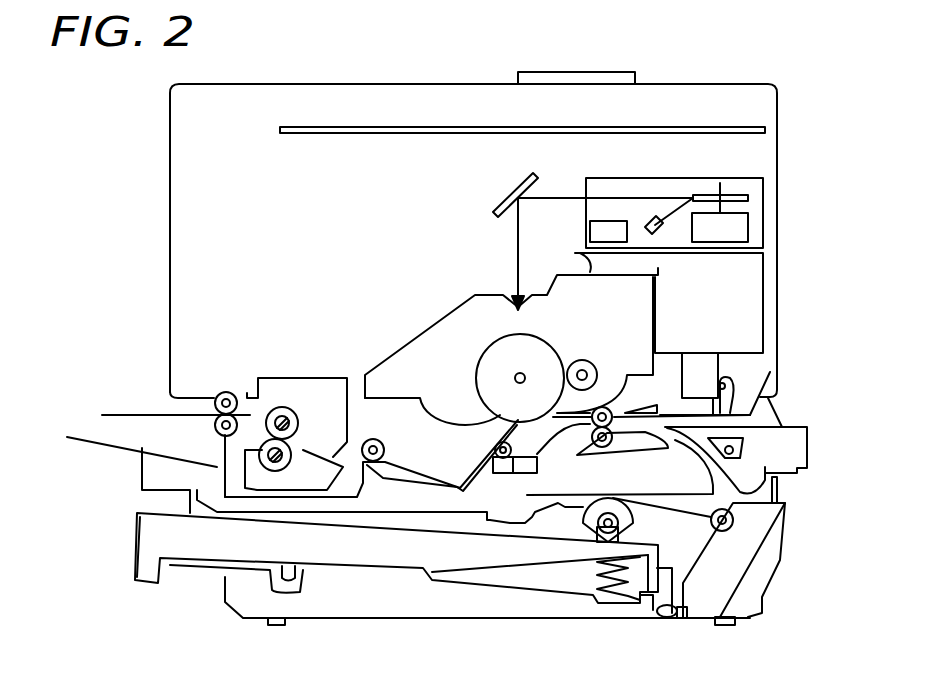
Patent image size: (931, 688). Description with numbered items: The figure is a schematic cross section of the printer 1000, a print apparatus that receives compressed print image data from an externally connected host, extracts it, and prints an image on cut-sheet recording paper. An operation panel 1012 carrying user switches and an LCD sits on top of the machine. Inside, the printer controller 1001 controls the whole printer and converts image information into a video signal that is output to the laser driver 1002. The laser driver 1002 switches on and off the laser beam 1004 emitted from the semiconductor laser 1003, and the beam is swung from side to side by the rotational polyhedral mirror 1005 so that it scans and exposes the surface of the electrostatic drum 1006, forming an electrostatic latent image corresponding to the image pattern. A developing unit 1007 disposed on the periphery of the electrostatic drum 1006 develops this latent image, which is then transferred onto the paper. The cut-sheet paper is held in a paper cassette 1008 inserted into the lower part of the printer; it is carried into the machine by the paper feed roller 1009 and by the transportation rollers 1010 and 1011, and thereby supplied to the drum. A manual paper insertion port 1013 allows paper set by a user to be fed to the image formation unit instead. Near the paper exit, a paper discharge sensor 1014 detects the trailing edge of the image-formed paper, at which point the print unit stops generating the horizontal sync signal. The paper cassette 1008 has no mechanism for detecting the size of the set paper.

The printer 1000 is at (743, 63).
The printer controller 1001 is at (680, 126).
The laser driver 1002 is at (590, 229).
The semiconductor laser 1003 is at (657, 233).
The laser beam 1004 is at (664, 197).
The rotational polyhedral mirror 1005 is at (748, 198).
The electrostatic drum 1006 is at (487, 343).
The developing unit 1007 is at (388, 358).
The paper cassette 1008 is at (137, 551).
The paper feed roller 1009 is at (587, 523).
The transportation roller 1010 is at (765, 568).
The transportation roller 1011 is at (620, 457).
The operation panel 1012 is at (617, 53).
The manual paper insertion port 1013 is at (768, 412).
The paper discharge sensor 1014 is at (246, 390).